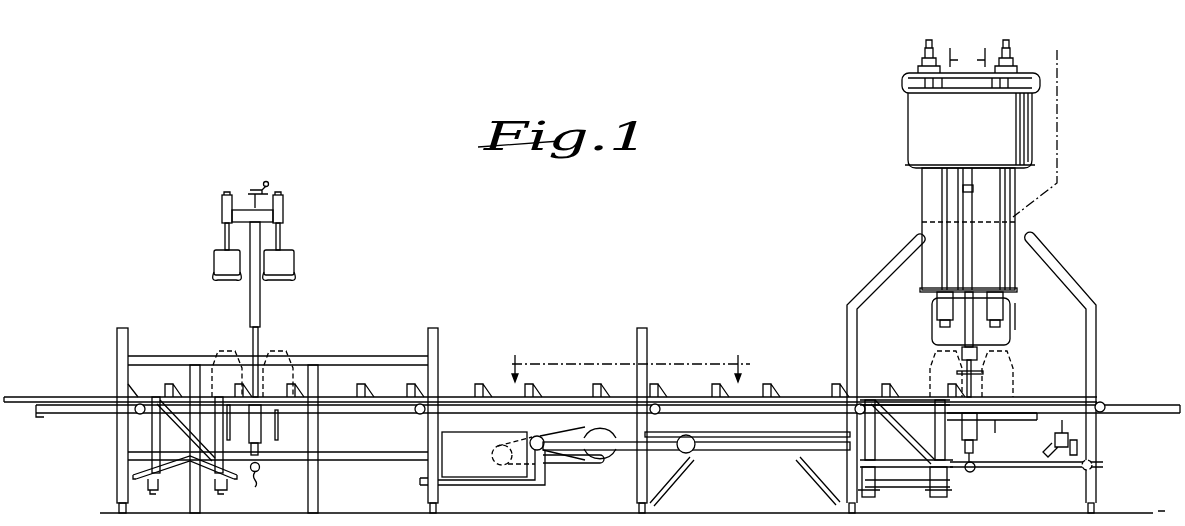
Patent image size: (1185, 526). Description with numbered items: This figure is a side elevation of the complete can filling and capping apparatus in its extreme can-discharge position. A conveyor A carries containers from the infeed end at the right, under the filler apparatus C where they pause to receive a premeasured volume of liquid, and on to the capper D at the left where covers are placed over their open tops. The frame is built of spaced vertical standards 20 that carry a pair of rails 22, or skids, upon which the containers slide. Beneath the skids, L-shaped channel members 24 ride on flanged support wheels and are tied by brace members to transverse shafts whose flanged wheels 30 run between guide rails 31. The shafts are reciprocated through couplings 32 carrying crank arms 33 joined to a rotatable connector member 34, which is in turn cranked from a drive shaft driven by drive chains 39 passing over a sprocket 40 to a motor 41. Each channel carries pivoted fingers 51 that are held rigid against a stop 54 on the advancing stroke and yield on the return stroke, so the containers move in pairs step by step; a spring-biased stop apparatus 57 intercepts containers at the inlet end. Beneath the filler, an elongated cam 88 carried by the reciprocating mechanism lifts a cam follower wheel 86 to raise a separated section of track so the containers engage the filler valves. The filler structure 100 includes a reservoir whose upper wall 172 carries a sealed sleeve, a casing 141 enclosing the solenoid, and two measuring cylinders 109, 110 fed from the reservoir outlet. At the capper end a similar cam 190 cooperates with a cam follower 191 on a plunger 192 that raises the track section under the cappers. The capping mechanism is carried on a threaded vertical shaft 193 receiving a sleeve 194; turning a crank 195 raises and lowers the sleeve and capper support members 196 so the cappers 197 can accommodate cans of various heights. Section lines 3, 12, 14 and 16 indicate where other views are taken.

The conveyor A is at (33, 393).
The filler apparatus C is at (919, 194).
The capper D is at (300, 255).
The section line 3— 3 is at (626, 368).
The section line 12— 12 is at (1060, 63).
The section line 14— 14 is at (942, 45).
The section line 16— 16 is at (1012, 40).
The vertical standards 20 is at (128, 344).
The rails 22 is at (46, 413).
The L-shaped channel members 24 is at (78, 397).
The flanged wheels 30 is at (693, 451).
The rails 31 is at (780, 426).
The couplings 32 is at (745, 481).
The crank arms 33 is at (627, 440).
The connector member 34 is at (534, 437).
The drive chains 39 is at (570, 442).
The sprocket 40 is at (492, 457).
The motor 41 is at (467, 440).
The finger 51 is at (602, 383).
The stop 54 is at (606, 389).
The stop apparatus 57 is at (1056, 421).
The cam follower wheel 86 is at (974, 471).
The elongated cam 88 is at (905, 448).
The filler structure 100 is at (907, 128).
The measuring cylinder 109 is at (1013, 215).
The second measuring cylinder 110 is at (937, 210).
The casing 141 is at (967, 59).
The upper wall of the reservoir 172 is at (918, 71).
The cam 190 is at (175, 477).
The cam follower 191 is at (256, 478).
The plunger 192 is at (259, 455).
The vertical shaft 193 is at (259, 339).
The sleeve 194 is at (261, 300).
The crank 195 is at (268, 187).
The capper support members 196 is at (222, 212).
The cappers 197 is at (215, 260).